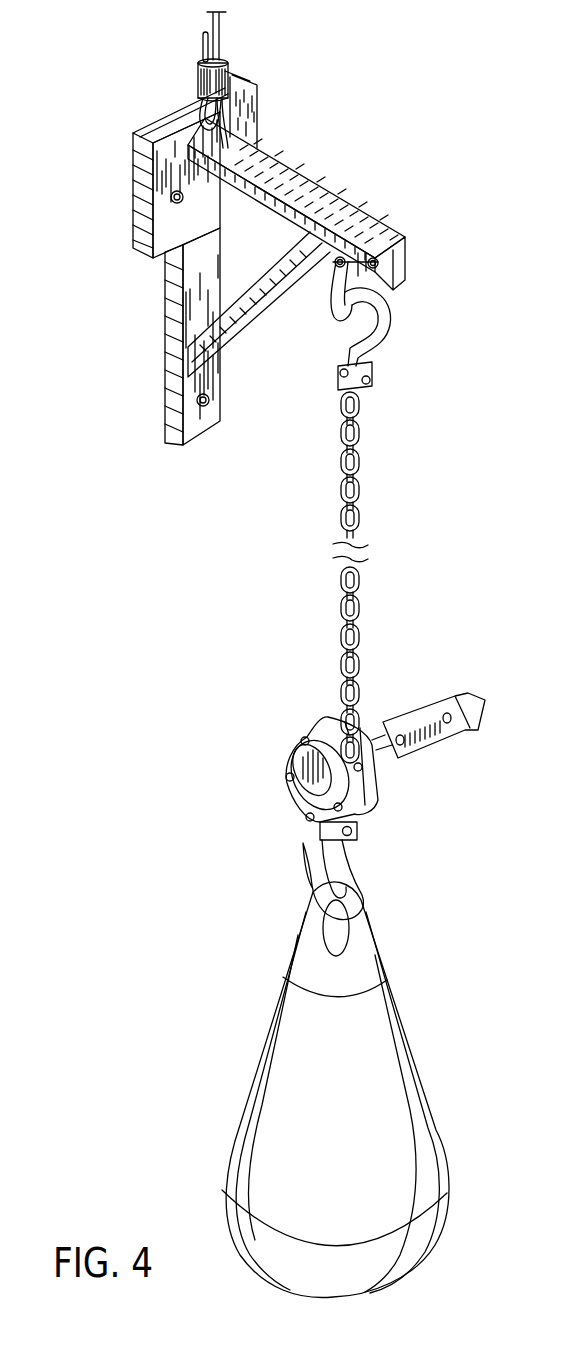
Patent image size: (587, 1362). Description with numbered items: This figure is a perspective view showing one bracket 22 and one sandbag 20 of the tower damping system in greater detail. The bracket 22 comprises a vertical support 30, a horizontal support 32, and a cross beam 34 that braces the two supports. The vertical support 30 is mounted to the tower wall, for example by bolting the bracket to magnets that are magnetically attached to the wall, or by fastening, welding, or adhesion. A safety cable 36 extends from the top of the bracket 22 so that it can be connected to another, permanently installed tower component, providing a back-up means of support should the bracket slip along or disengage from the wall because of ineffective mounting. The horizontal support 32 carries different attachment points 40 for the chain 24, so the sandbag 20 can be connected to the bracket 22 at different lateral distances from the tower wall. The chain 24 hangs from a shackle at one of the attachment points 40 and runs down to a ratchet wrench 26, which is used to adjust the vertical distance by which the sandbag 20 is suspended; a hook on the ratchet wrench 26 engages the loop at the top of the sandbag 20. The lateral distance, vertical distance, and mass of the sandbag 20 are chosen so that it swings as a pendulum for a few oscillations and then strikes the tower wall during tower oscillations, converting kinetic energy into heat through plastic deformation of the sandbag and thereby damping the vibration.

The sandbag 20 is at (273, 1003).
The bracket 22 is at (240, 258).
The chain 24 is at (360, 460).
The ratchet wrench 26 is at (283, 757).
The vertical support 30 is at (148, 260).
The horizontal support 32 is at (362, 210).
The cross beam 34 is at (250, 327).
The safety cable 36 is at (212, 16).
The attachment points 40 is at (380, 263).